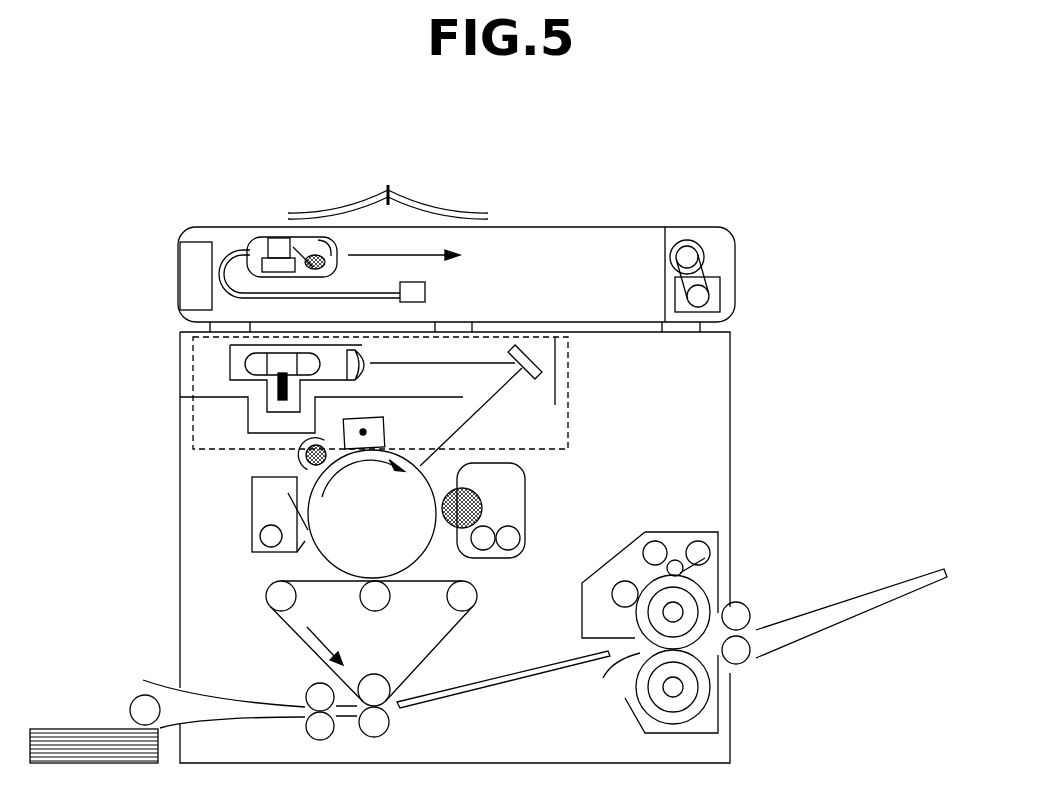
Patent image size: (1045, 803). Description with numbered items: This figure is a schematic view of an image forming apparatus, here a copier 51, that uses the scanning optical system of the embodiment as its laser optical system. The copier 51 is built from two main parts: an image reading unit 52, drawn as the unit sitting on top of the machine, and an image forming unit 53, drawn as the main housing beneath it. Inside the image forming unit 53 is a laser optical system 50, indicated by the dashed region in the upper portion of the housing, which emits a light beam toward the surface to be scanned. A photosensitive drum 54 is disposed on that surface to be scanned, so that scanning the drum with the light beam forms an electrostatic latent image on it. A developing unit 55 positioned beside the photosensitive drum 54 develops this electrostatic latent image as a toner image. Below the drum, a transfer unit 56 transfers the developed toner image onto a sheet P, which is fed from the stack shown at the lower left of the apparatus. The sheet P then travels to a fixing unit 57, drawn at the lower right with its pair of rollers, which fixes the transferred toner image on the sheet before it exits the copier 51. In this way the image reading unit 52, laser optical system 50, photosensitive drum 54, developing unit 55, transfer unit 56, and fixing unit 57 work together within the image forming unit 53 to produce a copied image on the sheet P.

The laser optical system 50 is at (193, 369).
The copier 51 is at (482, 138).
The image reading unit 52 is at (178, 274).
The image forming unit 53 is at (180, 457).
The photosensitive drum 54 is at (330, 528).
The developing unit 55 is at (512, 497).
The transfer unit 56 is at (333, 622).
The fixing unit 57 is at (710, 573).
The sheet P is at (88, 728).